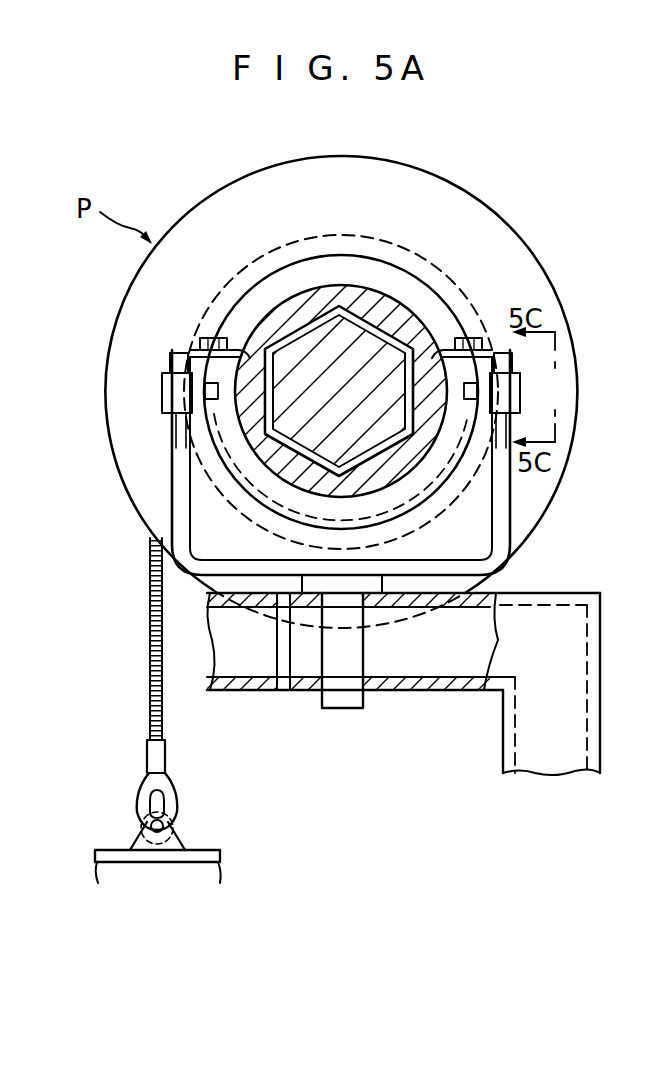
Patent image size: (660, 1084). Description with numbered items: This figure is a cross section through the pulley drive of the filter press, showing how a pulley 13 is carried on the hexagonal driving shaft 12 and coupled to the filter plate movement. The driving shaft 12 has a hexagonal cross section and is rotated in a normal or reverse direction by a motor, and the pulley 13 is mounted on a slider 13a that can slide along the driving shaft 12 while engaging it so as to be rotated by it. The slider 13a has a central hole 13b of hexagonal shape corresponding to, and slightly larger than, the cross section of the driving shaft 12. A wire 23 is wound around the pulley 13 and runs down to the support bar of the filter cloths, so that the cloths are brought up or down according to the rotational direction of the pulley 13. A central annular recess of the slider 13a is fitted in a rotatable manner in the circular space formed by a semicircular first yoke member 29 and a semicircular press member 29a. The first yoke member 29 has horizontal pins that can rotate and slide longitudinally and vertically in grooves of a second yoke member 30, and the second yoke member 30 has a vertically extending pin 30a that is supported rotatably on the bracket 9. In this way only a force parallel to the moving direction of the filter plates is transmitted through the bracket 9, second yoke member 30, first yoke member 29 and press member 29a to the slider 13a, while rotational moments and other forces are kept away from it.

The bracket 9 is at (600, 688).
The driving shaft 12 is at (372, 348).
The pulley 13 is at (528, 270).
The slider 13a is at (240, 340).
The central hole 13b is at (362, 316).
The wire 23 is at (150, 662).
The first yoke member 29 is at (232, 445).
The press member 29a is at (292, 293).
The second yoke member 30 is at (510, 518).
The pin 30a is at (347, 697).